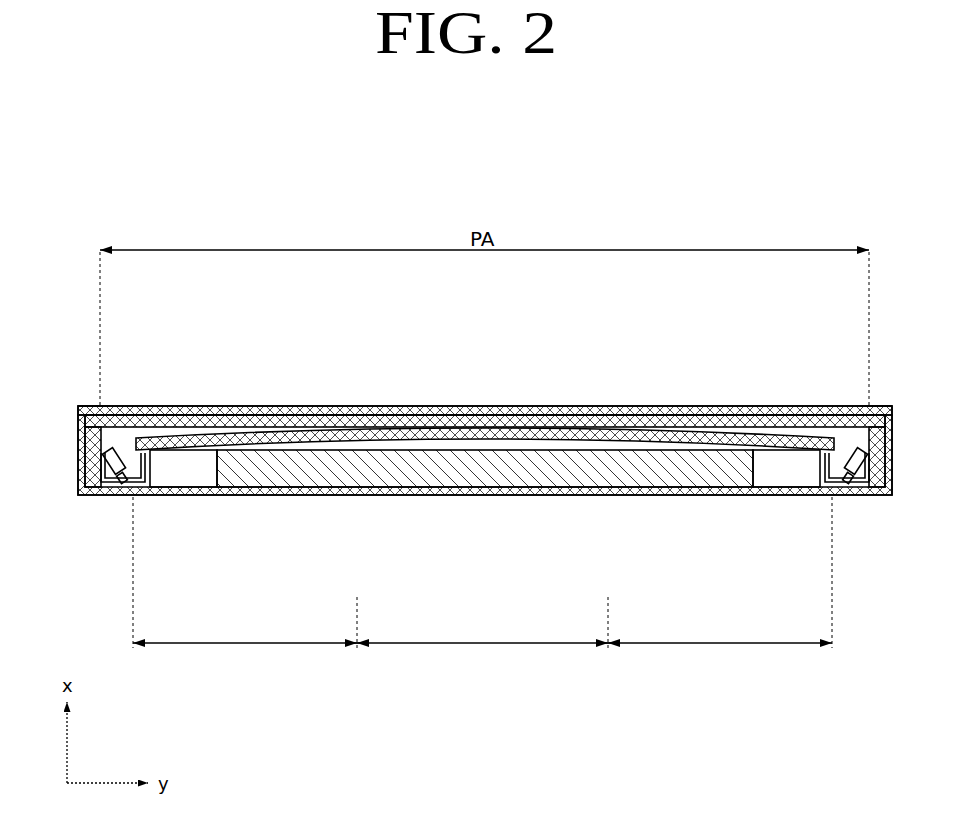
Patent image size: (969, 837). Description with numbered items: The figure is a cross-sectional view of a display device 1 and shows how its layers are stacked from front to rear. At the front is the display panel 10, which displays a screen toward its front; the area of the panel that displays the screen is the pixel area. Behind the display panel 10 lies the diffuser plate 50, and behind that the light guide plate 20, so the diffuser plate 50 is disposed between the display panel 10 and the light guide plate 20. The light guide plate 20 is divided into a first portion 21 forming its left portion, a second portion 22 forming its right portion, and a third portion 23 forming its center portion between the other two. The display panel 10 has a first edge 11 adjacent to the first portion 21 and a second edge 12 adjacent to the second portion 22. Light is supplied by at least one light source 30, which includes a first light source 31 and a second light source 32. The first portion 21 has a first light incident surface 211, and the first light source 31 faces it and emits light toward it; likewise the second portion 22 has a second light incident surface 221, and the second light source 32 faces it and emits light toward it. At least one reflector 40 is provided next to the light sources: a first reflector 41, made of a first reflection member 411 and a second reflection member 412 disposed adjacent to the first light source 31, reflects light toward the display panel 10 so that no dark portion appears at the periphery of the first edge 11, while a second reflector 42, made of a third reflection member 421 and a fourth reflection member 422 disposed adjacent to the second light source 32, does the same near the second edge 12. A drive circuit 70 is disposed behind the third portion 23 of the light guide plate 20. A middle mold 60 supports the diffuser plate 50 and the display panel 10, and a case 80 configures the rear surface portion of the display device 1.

The display device 1 is at (490, 132).
The display panel 10 is at (417, 406).
The first edge 11 is at (93, 407).
The second edge 12 is at (877, 407).
The light guide plate 20 is at (500, 432).
The first portion 21 is at (245, 583).
The second portion 22 is at (720, 583).
The third portion 23 is at (482, 633).
The first light incident surface 211 is at (148, 479).
The second light incident surface 221 is at (822, 479).
The light source 30 is at (795, 541).
The first light source 31 is at (118, 481).
The second light source 32 is at (852, 481).
The reflector 40 is at (775, 318).
The first reflector 41 is at (174, 364).
The second reflector 42 is at (793, 364).
The first reflection member 411 is at (110, 437).
The second reflection member 412 is at (127, 458).
The third reflection member 421 is at (860, 437).
The fourth reflection member 422 is at (843, 458).
The diffuser plate 50 is at (462, 416).
The middle mold 60 is at (87, 468).
The drive circuit 70 is at (485, 478).
The case 80 is at (78, 416).